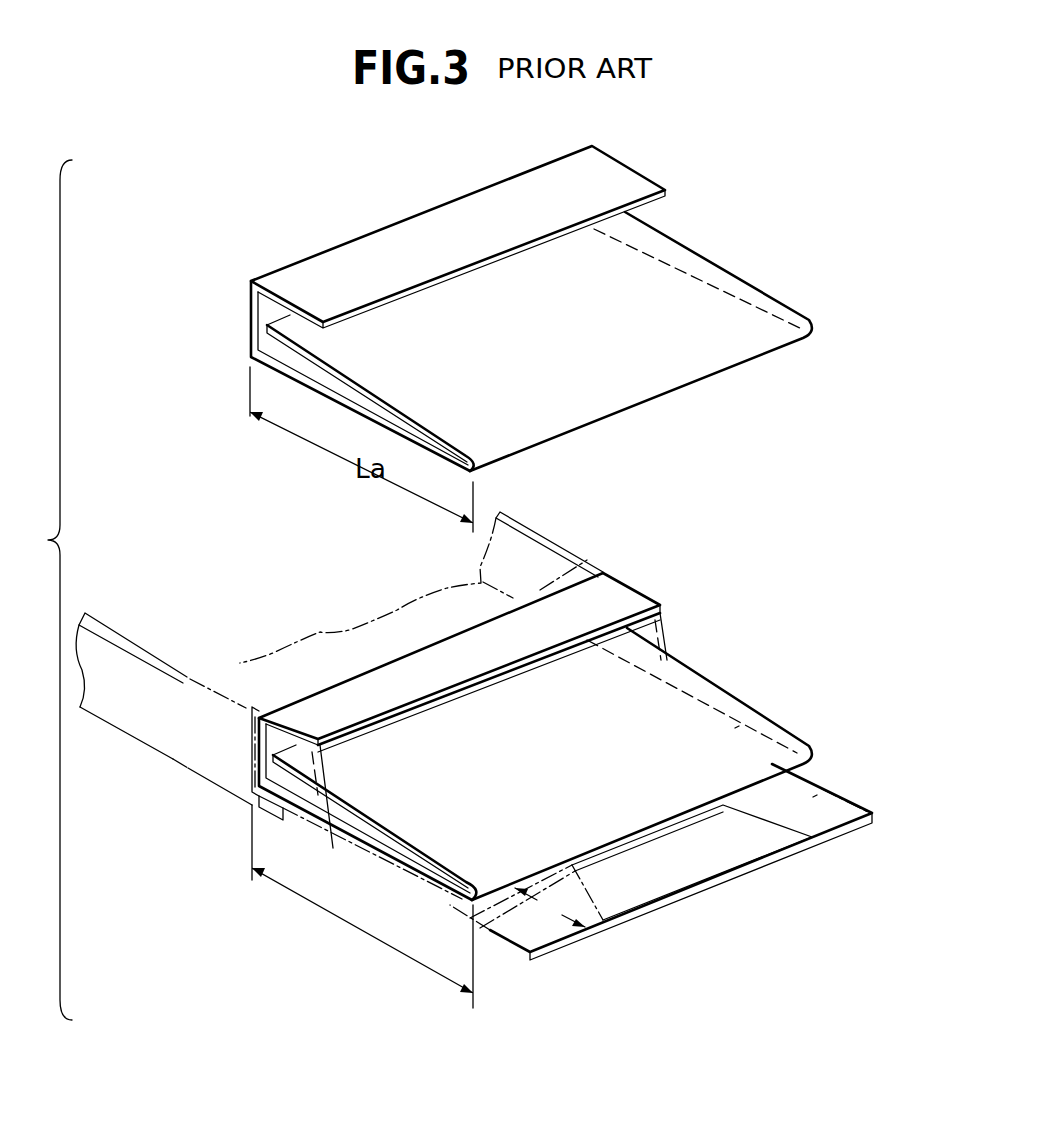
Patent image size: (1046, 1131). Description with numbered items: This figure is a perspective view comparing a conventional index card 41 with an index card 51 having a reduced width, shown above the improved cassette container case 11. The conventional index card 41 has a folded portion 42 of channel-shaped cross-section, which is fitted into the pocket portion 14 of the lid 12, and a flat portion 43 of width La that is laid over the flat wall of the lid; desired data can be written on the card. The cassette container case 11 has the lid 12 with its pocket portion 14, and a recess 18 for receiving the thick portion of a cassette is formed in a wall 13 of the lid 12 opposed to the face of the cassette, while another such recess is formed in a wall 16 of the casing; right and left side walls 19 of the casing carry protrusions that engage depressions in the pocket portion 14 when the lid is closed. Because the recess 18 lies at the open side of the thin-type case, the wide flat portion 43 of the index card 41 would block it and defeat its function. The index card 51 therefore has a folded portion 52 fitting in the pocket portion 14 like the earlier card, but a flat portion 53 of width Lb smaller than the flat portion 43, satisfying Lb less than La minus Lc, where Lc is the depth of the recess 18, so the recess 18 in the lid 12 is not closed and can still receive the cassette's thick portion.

The cassette container case 11 is at (322, 624).
The lid 12 is at (679, 816).
The wall 13 is at (813, 797).
The pocket portion 14 is at (650, 626).
The wall 16 is at (410, 618).
The recess 18 is at (715, 863).
The side walls 19 is at (538, 560).
The index card 41 is at (531, 308).
The folded portion 42 is at (381, 276).
The flat portion 43 is at (648, 387).
The index card 51 is at (535, 748).
The folded portion 52 is at (509, 693).
The flat portion 53 is at (735, 730).